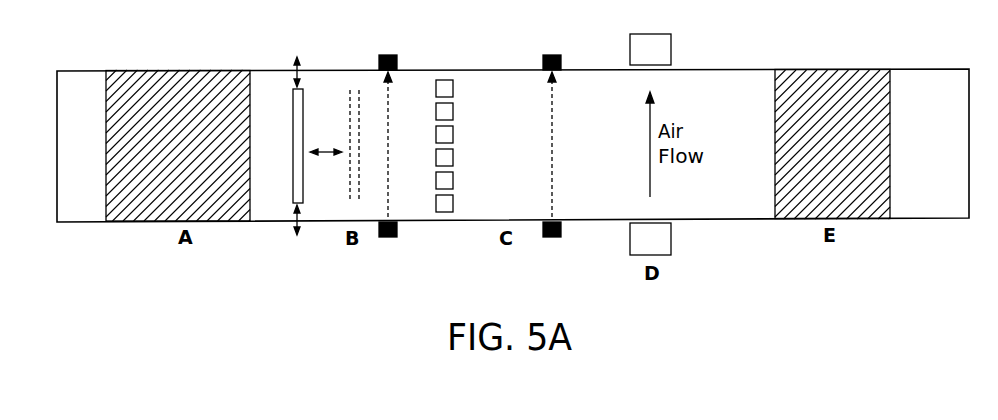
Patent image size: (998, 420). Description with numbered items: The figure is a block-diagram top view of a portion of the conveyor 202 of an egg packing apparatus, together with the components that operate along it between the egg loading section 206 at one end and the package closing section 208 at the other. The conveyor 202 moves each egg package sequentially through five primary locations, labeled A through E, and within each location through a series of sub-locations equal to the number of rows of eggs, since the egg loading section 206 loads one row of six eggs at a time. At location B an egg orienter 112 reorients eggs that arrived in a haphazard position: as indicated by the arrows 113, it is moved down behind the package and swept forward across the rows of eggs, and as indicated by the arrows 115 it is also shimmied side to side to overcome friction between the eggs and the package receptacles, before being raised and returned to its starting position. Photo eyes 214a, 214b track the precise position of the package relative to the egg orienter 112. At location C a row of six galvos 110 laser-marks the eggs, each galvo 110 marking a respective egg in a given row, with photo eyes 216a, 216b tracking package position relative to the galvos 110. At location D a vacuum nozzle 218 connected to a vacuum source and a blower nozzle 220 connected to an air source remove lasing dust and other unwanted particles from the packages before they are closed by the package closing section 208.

The conveyor 202 is at (82, 223).
The egg loading section 206 is at (195, 158).
The package closing section 208 is at (848, 154).
The galvos 110 is at (470, 124).
The egg orienter 112 is at (302, 144).
The arrows 113 is at (322, 154).
The arrows 115 is at (300, 72).
The photo eye 214a is at (388, 237).
The photo eye 214b is at (388, 55).
The photo eye 216a is at (552, 237).
The photo eye 216b is at (552, 55).
The vacuum nozzle 218 is at (671, 50).
The blower nozzle 220 is at (671, 240).